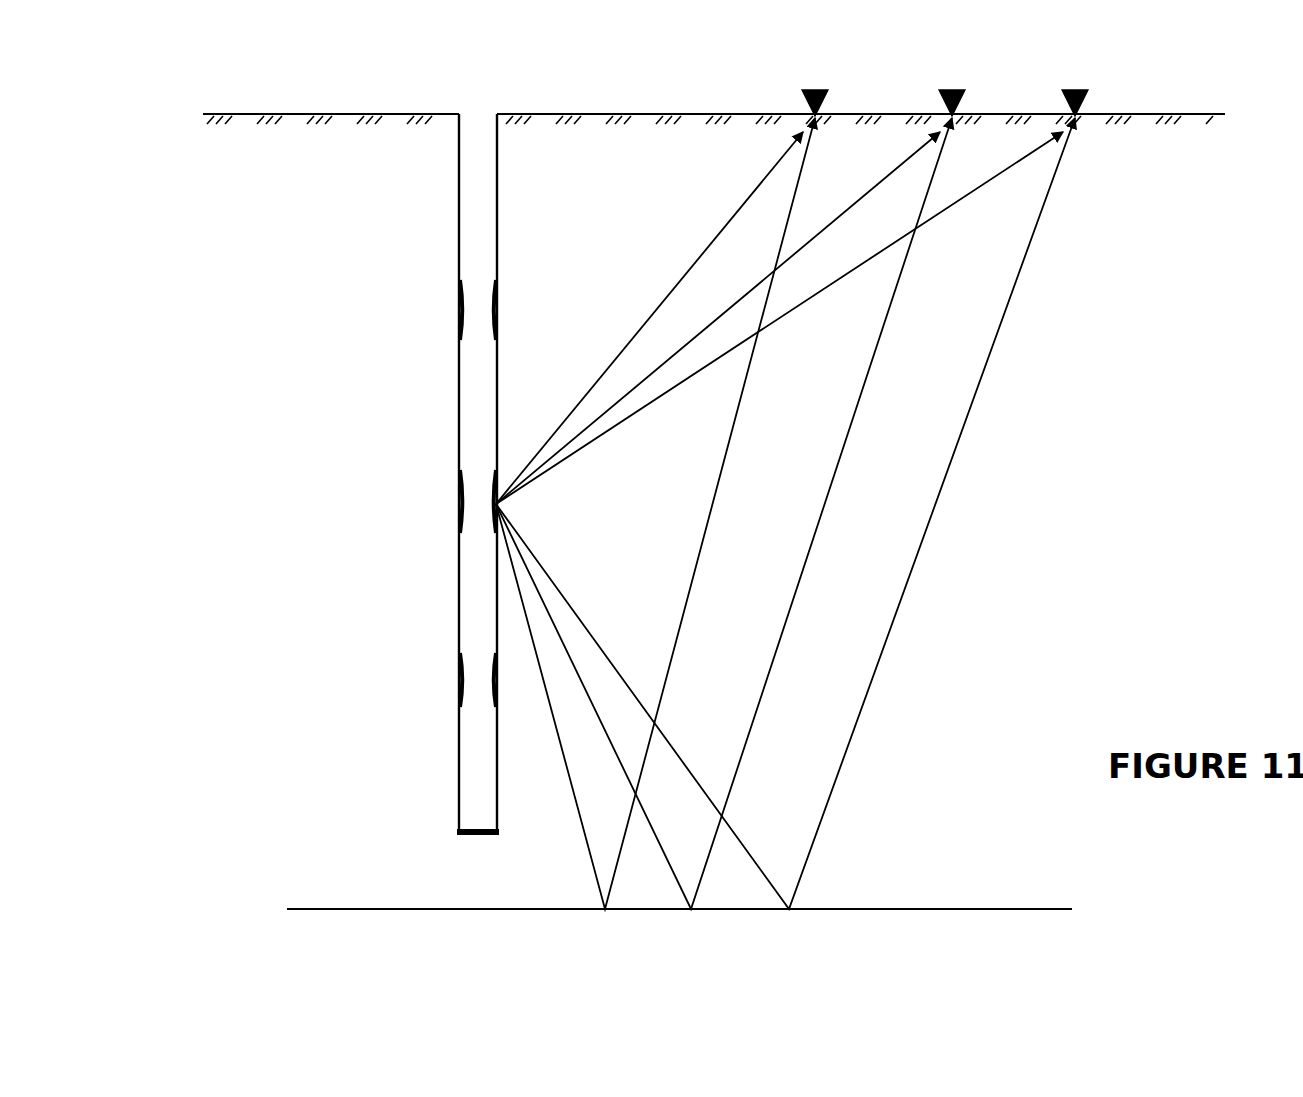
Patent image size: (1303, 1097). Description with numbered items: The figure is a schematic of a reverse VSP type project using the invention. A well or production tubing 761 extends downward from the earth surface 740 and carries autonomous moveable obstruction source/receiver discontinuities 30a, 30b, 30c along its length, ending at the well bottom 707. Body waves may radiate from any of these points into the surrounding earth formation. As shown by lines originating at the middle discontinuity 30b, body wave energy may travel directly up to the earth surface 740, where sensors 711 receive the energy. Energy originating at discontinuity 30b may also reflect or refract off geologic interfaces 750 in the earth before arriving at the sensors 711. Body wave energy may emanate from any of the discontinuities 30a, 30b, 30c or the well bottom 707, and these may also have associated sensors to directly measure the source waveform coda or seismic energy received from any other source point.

The earth surface 740 is at (204, 112).
The well or production tubing 761 is at (470, 100).
The sensors 711 is at (1064, 96).
The autonomous moveable obstruction source/receiver discontinuity 30a is at (460, 320).
The autonomous moveable obstruction source/receiver discontinuity 30b is at (458, 503).
The autonomous moveable obstruction source/receiver discontinuity 30c is at (459, 688).
The well bottom 707 is at (442, 829).
The geologic interfaces 750 is at (284, 908).